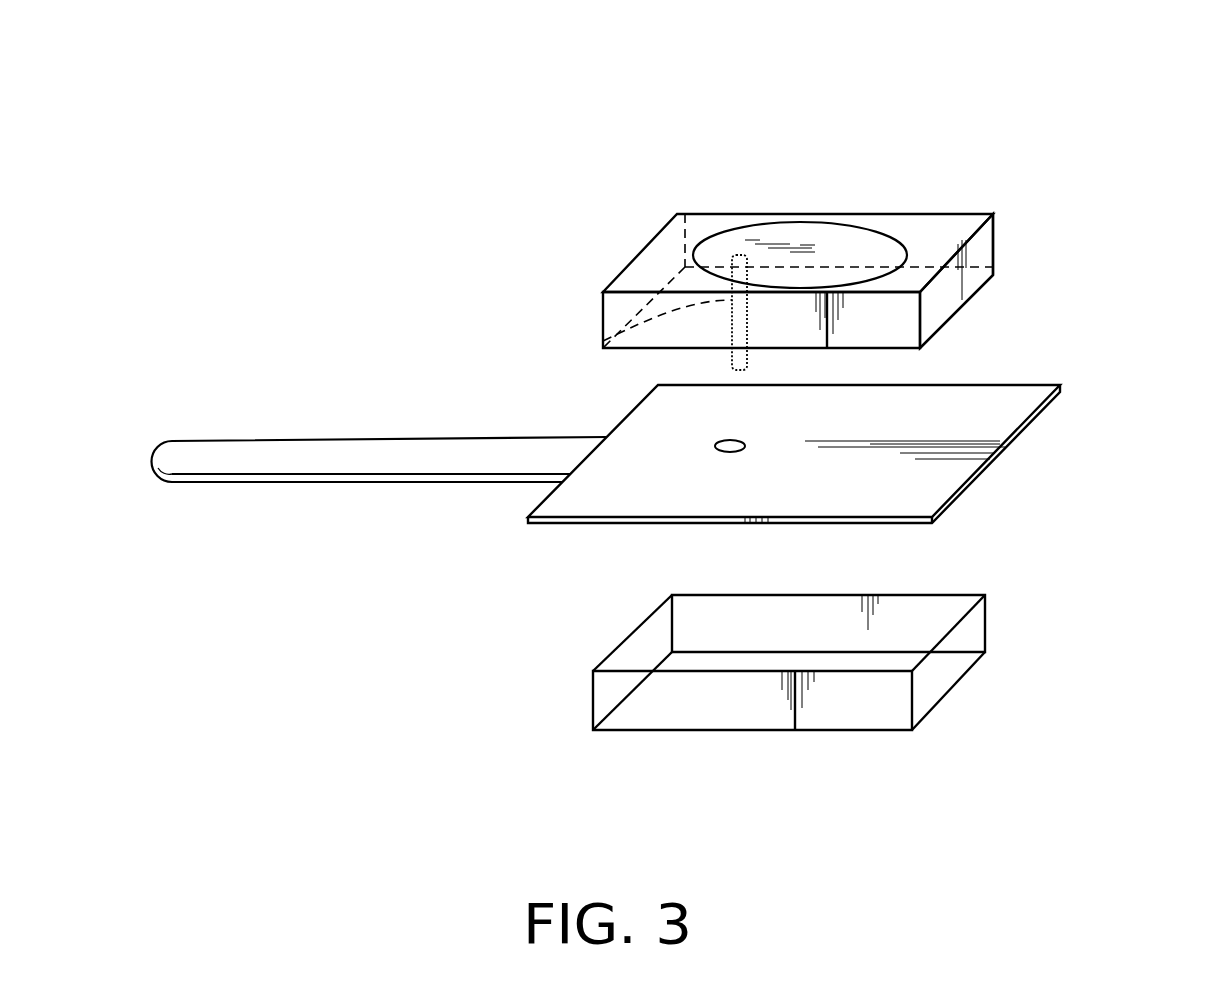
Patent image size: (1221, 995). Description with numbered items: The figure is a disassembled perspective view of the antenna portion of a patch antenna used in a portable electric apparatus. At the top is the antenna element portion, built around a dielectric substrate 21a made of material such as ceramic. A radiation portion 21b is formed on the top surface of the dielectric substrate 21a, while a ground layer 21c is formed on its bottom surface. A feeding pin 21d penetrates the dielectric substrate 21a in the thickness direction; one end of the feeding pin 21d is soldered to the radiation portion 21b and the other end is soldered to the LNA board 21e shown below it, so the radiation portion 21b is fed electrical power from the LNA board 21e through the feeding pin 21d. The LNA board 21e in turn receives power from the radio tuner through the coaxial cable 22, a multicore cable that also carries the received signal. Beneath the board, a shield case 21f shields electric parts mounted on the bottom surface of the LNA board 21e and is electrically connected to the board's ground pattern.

The dielectric substrate 21a is at (922, 227).
The radiation portion 21b is at (785, 240).
The ground layer 21c is at (947, 308).
The feeding pin 21d is at (603, 340).
The LNA board 21e is at (922, 462).
The shield case 21f is at (740, 702).
The coaxial cable 22 is at (265, 463).